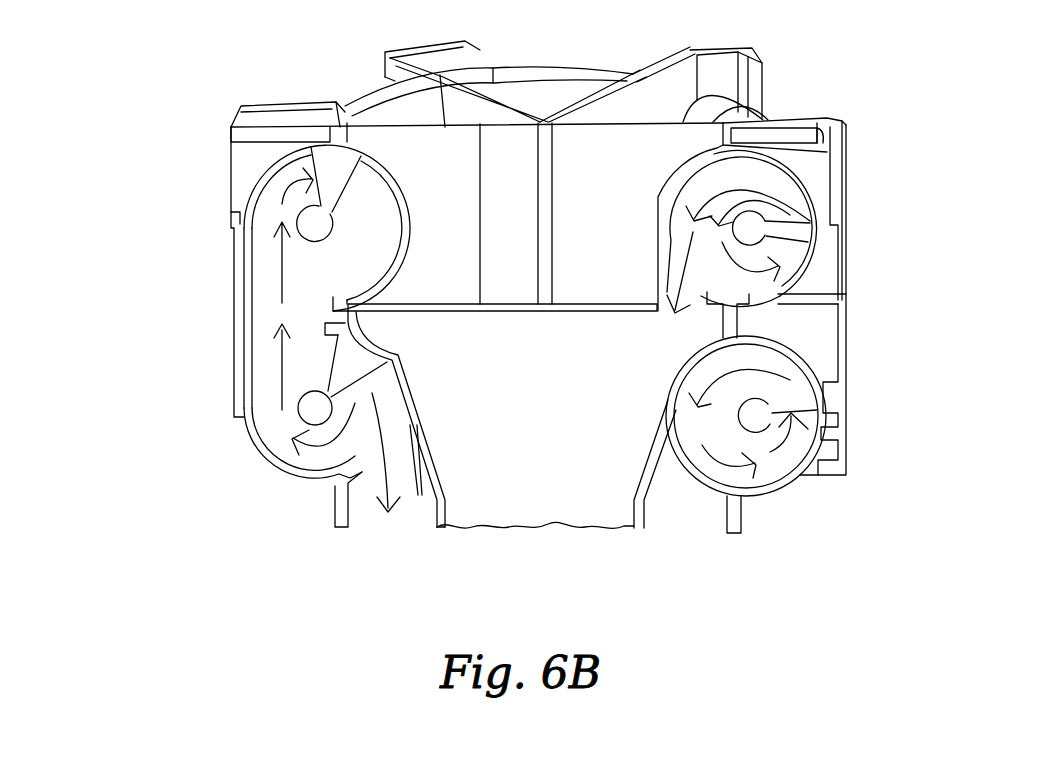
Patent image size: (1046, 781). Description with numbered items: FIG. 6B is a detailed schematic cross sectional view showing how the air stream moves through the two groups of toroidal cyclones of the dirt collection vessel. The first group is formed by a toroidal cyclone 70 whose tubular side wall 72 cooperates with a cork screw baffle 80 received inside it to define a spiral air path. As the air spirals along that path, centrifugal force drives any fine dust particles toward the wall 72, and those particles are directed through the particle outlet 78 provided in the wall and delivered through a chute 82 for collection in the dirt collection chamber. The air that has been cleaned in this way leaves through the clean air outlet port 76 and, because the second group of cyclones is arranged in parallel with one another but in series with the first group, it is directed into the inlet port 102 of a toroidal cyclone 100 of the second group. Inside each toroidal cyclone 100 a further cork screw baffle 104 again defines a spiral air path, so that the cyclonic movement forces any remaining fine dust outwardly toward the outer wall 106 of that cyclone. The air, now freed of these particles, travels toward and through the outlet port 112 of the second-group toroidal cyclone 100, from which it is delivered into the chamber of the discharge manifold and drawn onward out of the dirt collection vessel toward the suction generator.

The toroidal cyclone 70 is at (882, 392).
The wall of the toroidal cyclone 72 is at (770, 400).
The clean air outlet port 76 is at (264, 326).
The particle outlet 78 is at (425, 527).
The cork screw baffle 80 is at (317, 462).
The chute 82 is at (538, 484).
The toroidal cyclone of the second group 100 is at (868, 199).
The inlet port 102 is at (262, 307).
The cork screw baffle 104 is at (280, 180).
The outer wall of the toroidal cyclone 106 is at (377, 158).
The outlet port 112 is at (672, 312).